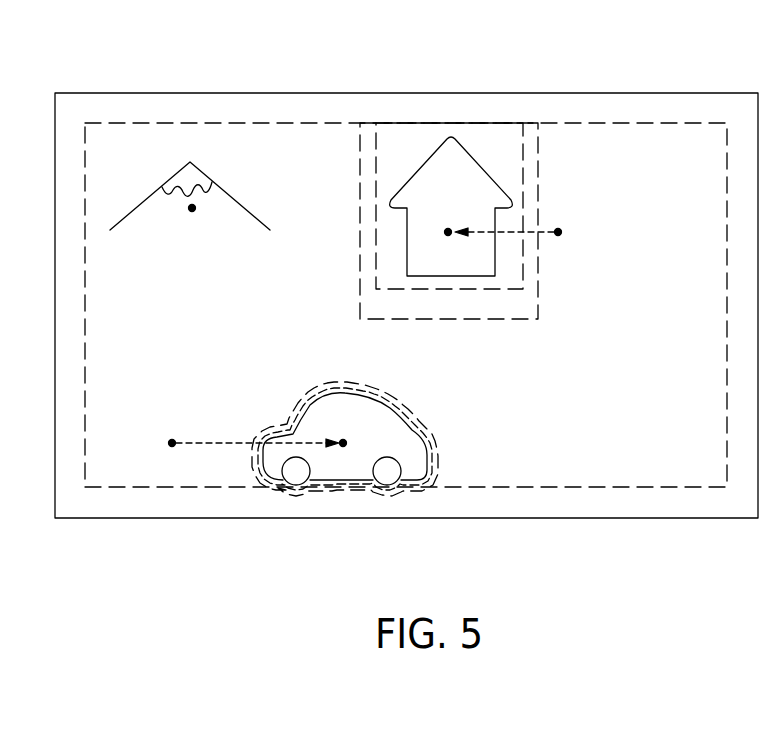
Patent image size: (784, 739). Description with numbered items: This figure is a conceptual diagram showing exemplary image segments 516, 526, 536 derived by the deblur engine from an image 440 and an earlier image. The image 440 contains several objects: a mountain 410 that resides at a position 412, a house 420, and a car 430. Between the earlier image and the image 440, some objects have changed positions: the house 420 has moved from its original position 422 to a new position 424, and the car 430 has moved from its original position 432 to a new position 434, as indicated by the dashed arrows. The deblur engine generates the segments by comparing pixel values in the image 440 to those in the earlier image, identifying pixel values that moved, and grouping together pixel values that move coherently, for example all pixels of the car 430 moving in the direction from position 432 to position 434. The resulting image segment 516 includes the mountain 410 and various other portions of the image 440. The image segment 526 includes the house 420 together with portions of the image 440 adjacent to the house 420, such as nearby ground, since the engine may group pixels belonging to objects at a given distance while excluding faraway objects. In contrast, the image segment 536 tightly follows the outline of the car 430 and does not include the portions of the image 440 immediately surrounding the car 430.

The image 440 is at (651, 93).
The image segment 516 is at (86, 164).
The mountain 410 is at (218, 168).
The position 412 is at (190, 211).
The house 420 is at (480, 158).
The position 422 is at (558, 236).
The position 424 is at (448, 236).
The image segment 526 is at (523, 182).
The car 430 is at (392, 407).
The position 432 is at (172, 440).
The position 434 is at (343, 447).
The image segment 536 is at (431, 440).